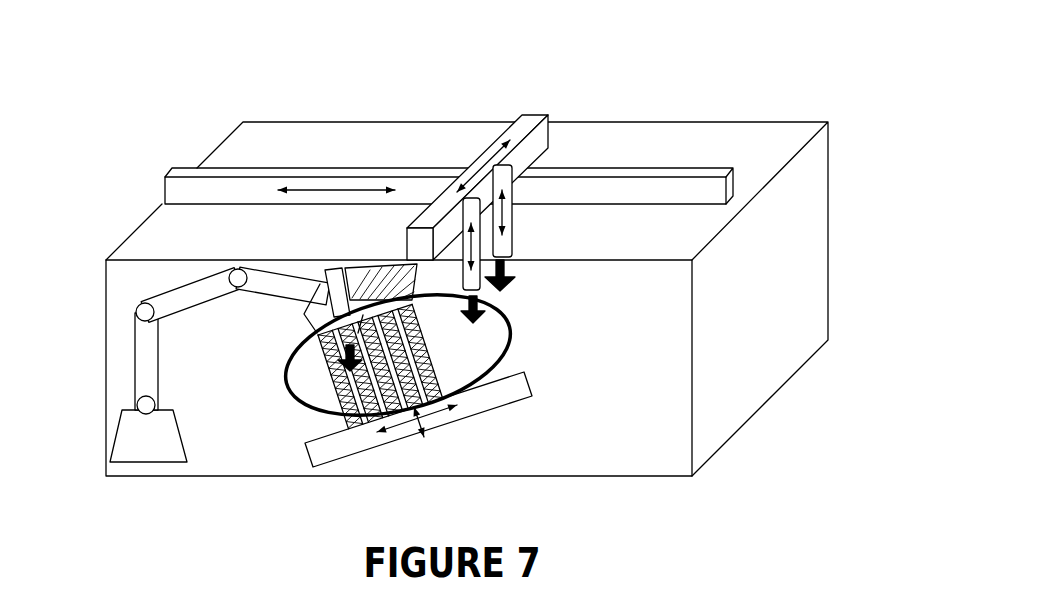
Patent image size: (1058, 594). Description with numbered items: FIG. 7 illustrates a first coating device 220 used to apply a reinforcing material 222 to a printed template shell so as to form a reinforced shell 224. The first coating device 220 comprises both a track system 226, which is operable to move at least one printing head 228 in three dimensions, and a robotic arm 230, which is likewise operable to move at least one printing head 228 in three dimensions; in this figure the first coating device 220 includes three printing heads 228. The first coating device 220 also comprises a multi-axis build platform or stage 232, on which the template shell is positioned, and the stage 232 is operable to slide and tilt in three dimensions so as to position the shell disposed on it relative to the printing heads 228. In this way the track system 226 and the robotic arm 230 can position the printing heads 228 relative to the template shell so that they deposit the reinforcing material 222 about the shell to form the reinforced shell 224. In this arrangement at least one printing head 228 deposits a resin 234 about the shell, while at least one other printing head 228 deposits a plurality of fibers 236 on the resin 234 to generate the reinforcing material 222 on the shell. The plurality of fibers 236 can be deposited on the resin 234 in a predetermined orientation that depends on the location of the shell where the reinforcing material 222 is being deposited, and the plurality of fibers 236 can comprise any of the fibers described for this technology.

The first coating device 220 is at (780, 90).
The reinforcing material 222 is at (293, 400).
The reinforced shell 224 is at (513, 337).
The track system 226 is at (454, 153).
The printing head 228 is at (334, 268).
The robotic arm 230 is at (135, 350).
The multi-axis build platform or stage 232 is at (470, 403).
The resin 234 is at (510, 268).
The plurality of fibers 236 is at (347, 375).